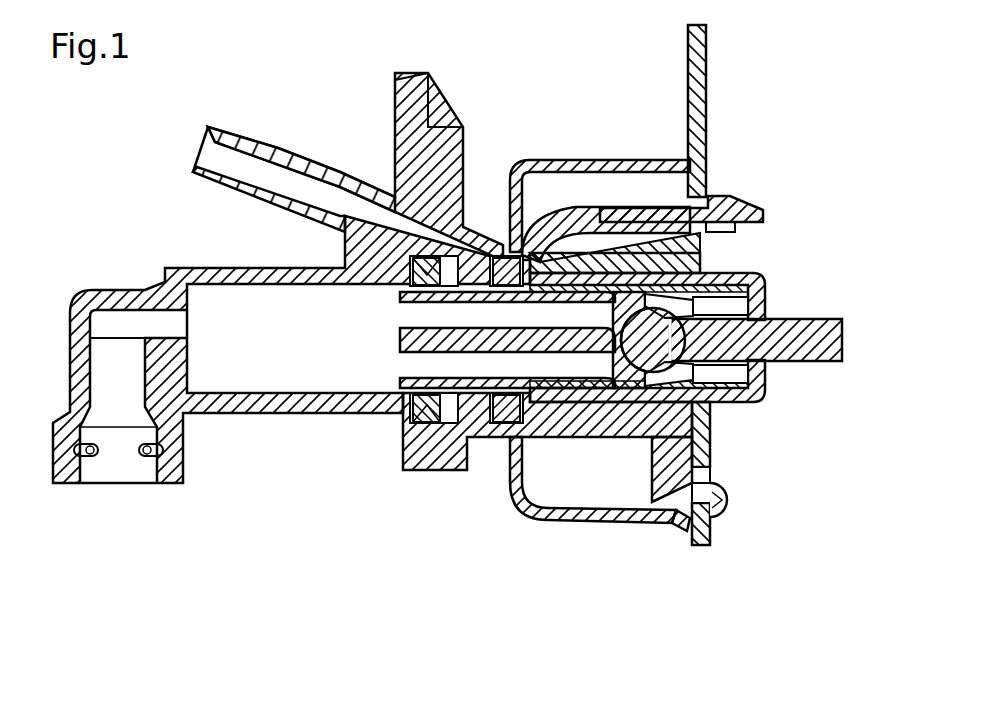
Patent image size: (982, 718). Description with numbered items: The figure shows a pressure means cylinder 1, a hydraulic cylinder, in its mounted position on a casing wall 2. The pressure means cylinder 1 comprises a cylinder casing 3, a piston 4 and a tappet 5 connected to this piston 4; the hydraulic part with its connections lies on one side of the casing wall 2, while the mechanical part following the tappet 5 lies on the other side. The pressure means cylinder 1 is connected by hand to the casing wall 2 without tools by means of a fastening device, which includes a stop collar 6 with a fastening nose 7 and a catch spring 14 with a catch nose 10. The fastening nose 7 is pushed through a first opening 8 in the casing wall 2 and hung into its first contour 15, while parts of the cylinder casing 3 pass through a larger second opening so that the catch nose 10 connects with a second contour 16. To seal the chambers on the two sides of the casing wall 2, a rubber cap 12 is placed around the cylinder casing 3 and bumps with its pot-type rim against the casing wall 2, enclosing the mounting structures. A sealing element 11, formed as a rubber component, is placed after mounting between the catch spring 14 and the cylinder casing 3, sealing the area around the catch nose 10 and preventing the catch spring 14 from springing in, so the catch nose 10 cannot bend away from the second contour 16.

The pressure means cylinder 1 is at (328, 110).
The casing wall 2 is at (706, 95).
The cylinder casing 3 is at (490, 432).
The piston 4 is at (412, 372).
The tappet 5 is at (820, 355).
The stop collar 6 is at (662, 503).
The fastening nose 7 is at (730, 510).
The first opening 8 is at (710, 474).
The catch nose 10 is at (733, 208).
The sealing element 11 is at (710, 250).
The rubber cap 12 is at (607, 523).
The catch spring 14 is at (641, 213).
The first contour 15 is at (677, 533).
The second contour 16 is at (720, 230).